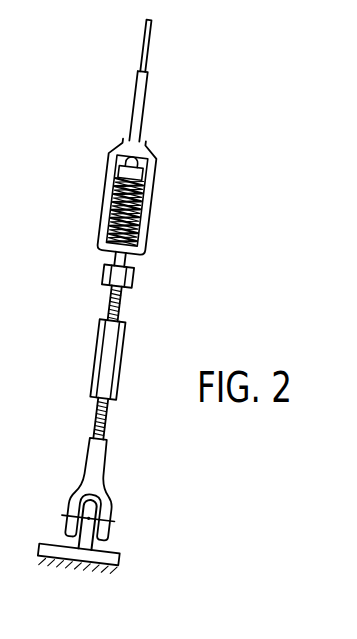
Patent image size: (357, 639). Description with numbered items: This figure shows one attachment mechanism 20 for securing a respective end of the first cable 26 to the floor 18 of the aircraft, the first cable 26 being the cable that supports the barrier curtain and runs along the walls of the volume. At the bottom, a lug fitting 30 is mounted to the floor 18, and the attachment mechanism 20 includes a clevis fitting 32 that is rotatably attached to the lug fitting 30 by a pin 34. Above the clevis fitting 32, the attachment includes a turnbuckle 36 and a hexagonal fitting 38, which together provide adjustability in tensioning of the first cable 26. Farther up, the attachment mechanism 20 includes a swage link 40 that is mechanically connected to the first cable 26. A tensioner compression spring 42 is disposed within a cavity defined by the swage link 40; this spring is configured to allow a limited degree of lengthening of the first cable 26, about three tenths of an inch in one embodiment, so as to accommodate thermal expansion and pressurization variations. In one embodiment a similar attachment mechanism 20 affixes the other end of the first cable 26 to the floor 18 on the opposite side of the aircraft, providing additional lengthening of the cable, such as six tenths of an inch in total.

The attachment mechanism 20 is at (104, 122).
The first cable 26 is at (151, 48).
The swage link 40 is at (150, 108).
The tensioner compression spring 42 is at (139, 190).
The hexagonal fitting 38 is at (133, 282).
The turnbuckle 36 is at (118, 364).
The clevis fitting 32 is at (106, 486).
The pin 34 is at (114, 516).
The lug fitting 30 is at (122, 547).
The floor 18 is at (97, 565).